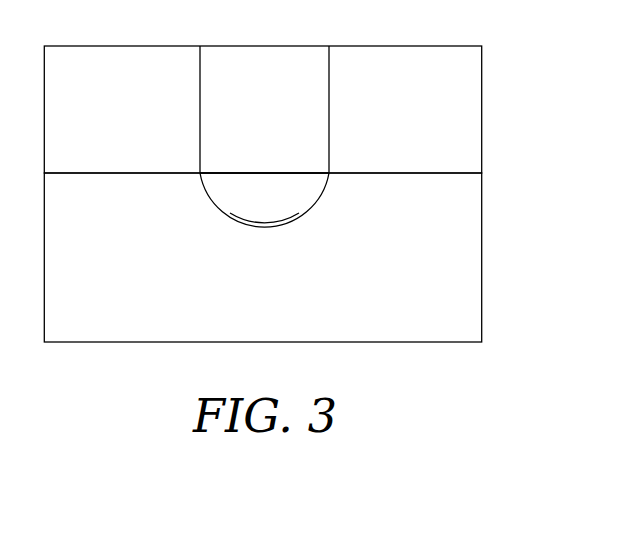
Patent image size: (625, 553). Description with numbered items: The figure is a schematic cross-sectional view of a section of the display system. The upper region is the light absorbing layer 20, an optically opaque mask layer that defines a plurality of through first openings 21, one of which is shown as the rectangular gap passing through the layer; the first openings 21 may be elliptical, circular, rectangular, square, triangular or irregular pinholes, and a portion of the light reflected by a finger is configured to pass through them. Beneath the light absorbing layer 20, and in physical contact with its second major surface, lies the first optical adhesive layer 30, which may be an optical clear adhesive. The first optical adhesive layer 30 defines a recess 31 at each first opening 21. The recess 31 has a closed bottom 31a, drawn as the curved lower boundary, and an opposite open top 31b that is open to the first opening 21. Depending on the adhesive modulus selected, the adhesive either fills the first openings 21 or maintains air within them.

The light absorbing layer 20 is at (442, 96).
The first opening 21 is at (242, 92).
The first optical adhesive layer 30 is at (443, 314).
The recess 31 is at (230, 202).
The closed bottom 31a is at (287, 228).
The open top 31b is at (266, 160).